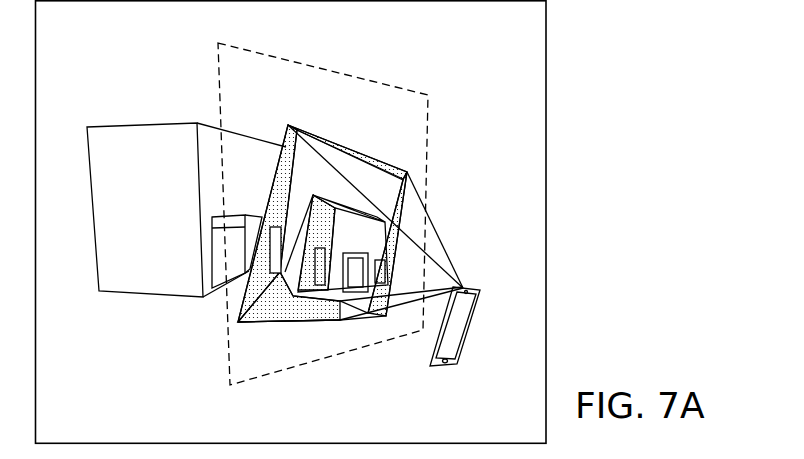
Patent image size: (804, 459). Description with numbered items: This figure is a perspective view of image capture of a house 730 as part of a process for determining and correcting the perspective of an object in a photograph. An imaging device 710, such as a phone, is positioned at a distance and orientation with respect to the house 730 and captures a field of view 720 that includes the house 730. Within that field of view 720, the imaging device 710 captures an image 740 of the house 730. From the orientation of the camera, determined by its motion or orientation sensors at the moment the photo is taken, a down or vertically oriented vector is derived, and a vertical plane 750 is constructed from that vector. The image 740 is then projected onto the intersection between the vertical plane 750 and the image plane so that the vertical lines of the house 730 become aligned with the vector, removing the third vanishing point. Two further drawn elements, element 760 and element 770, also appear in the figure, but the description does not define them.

The mobile device 710 is at (474, 371).
The projected virtual display 720 is at (285, 117).
The physical object 730 is at (193, 117).
The virtual content 740 is at (314, 195).
The field of view boundary 750 is at (433, 85).
The bottom edge of virtual display 760 is at (325, 320).
The projection lines 770 is at (363, 232).